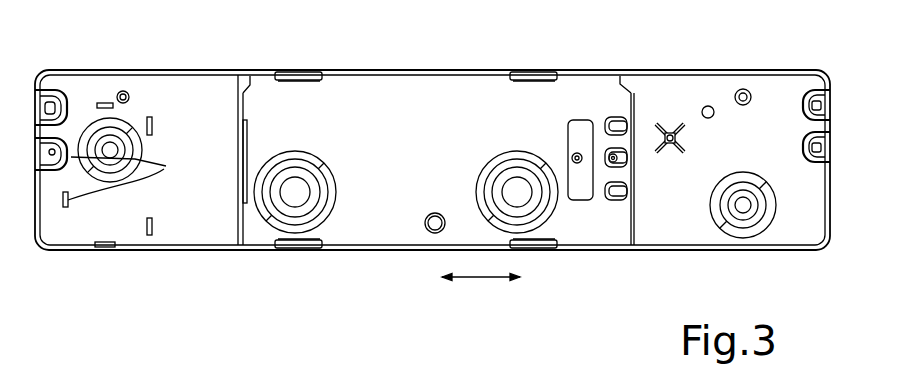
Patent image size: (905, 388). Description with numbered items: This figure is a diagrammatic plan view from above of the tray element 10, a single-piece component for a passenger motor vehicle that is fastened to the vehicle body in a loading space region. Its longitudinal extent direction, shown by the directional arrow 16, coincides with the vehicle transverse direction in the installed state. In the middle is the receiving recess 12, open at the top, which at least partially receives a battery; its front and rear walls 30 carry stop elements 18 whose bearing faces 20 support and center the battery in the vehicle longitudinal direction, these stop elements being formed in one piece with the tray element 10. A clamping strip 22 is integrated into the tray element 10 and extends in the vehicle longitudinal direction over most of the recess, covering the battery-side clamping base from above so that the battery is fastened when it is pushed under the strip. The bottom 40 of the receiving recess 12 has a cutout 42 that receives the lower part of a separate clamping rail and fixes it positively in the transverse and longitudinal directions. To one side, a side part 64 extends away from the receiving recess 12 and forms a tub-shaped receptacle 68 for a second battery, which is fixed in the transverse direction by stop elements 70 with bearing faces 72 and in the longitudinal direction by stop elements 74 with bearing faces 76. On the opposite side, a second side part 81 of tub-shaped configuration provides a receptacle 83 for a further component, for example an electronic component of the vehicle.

The tray element 10 is at (672, 248).
The receiving recess 12 is at (470, 83).
The directional arrow 16 is at (488, 280).
The stop elements 18 is at (291, 72).
The bearing faces 20 is at (312, 82).
The clamping strip 22 is at (248, 130).
The walls 30 is at (460, 70).
The bottom 40 is at (398, 92).
The cutout 42 is at (577, 125).
The side part 64 is at (157, 262).
The receptacle 68 is at (86, 250).
The stop elements 70 is at (71, 157).
The bearing faces 72 is at (148, 228).
The stop elements 74 is at (100, 104).
The bearing faces 76 is at (112, 112).
The second side part 81 is at (648, 255).
The receptacle 83 is at (722, 105).